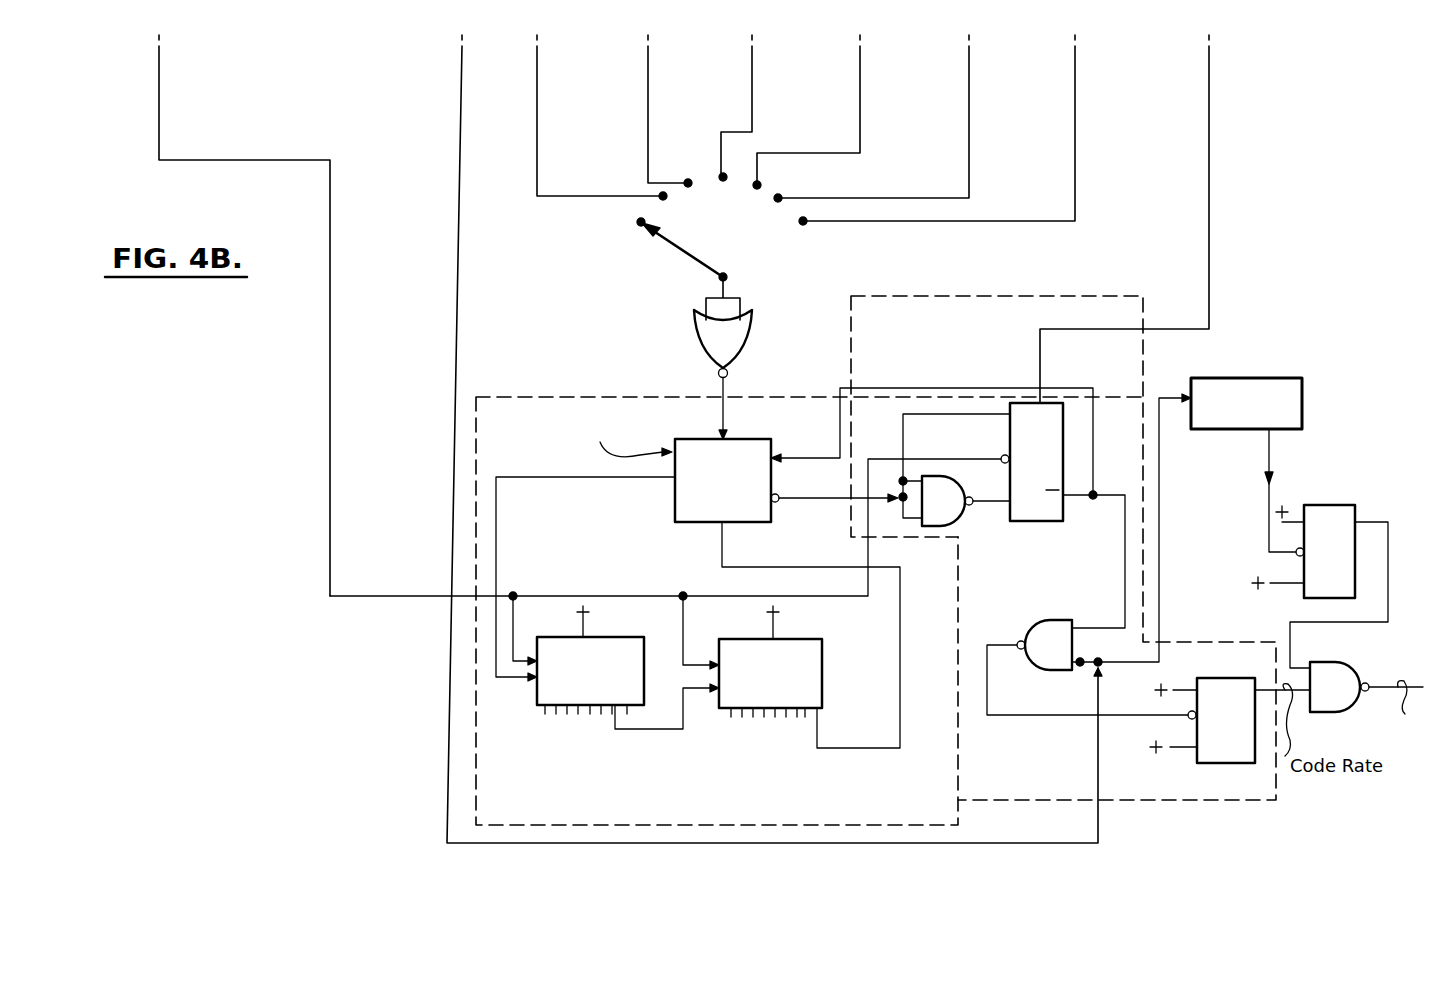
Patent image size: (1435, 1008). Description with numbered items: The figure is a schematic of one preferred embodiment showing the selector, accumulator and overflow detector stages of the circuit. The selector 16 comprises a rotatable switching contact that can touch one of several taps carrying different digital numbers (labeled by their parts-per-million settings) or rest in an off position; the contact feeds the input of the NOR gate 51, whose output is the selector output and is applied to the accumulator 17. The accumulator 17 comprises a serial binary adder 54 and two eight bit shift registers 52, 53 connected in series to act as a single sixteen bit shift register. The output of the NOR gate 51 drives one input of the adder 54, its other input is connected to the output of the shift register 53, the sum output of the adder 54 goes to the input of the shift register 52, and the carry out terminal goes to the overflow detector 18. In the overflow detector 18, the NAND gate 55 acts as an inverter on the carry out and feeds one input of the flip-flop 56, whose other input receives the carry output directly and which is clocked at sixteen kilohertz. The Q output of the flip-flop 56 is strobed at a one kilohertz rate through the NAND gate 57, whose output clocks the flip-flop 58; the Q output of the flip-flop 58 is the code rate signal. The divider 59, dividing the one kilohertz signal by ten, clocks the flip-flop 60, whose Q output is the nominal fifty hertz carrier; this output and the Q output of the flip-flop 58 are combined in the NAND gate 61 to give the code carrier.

The selector 16 is at (797, 340).
The accumulator 17 is at (575, 535).
The overflow detector 18 is at (1028, 778).
The NOR gate 51 is at (703, 330).
The shift register 52 is at (611, 638).
The shift register 53 is at (808, 640).
The serial binary adder 54 is at (680, 497).
The NAND gate 55 is at (949, 482).
The flip-flop 56 is at (1063, 437).
The NAND gate 57 is at (1058, 620).
The flip-flop 58 is at (1228, 678).
The divider 59 is at (1274, 378).
The flip-flop 60 is at (1345, 506).
The NAND gate 61 is at (1350, 680).